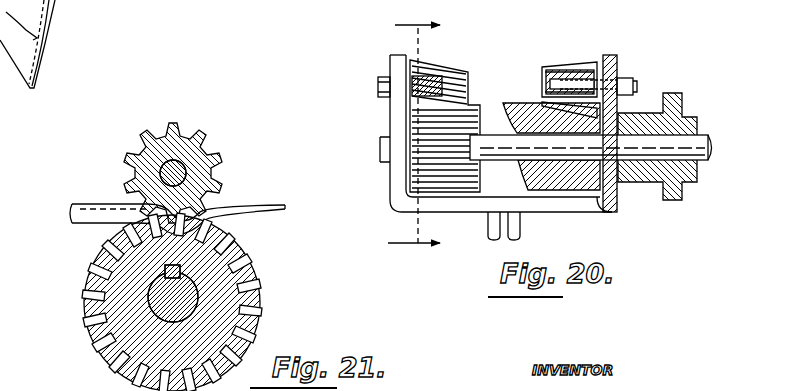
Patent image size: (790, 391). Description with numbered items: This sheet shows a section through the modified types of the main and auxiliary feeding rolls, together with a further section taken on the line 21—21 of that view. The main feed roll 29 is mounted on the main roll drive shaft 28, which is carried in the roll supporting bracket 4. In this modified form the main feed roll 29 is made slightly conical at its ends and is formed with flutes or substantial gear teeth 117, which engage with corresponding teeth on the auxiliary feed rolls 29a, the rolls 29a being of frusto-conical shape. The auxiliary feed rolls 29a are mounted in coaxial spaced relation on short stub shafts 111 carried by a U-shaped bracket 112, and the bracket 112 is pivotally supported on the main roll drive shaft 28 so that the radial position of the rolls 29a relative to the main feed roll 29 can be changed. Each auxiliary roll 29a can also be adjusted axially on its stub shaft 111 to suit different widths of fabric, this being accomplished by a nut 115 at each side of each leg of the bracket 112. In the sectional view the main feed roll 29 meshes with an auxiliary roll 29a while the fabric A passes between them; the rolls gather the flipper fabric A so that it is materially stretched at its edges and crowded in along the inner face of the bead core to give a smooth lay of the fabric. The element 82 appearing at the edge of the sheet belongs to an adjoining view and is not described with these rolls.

In FIG. 20, the roll supporting bracket 4 is at (683, 197).
In FIG. 20, the section line 21— 21 is at (392, 136).
In FIG. 20, the main roll drive shaft 28 is at (708, 135).
In FIG. 21, the main roll drive shaft 28 is at (125, 355).
In FIG. 20, the main feed roll 29 is at (515, 103).
In FIG. 21, the main feed roll 29 is at (83, 298).
In FIG. 20, the auxiliary feed rolls 29a is at (466, 73).
In FIG. 21, the auxiliary feed rolls 29a is at (186, 135).
In FIG. 21, the blade 82 is at (75, 0).
In FIG. 20, the stub shafts 111 is at (378, 88).
In FIG. 20, the U-shaped bracket 112 is at (392, 178).
In FIG. 20, the nut 115 is at (378, 66).
In FIG. 20, the gear teeth 117 is at (412, 128).
In FIG. 21, the gear teeth 117 is at (262, 290).
In FIG. 21, the fabric A is at (80, 203).